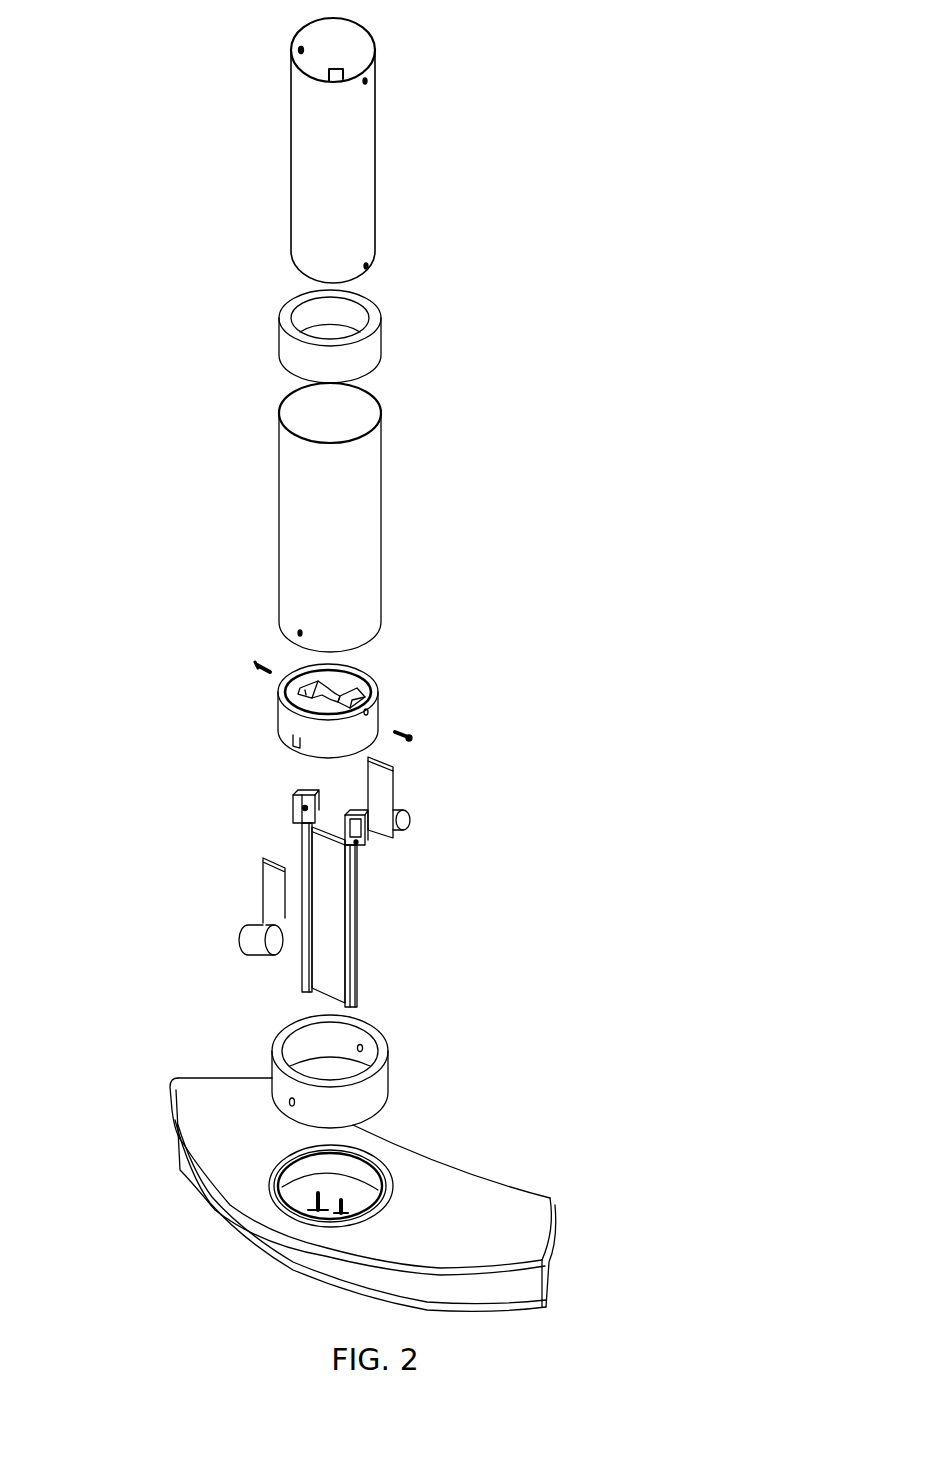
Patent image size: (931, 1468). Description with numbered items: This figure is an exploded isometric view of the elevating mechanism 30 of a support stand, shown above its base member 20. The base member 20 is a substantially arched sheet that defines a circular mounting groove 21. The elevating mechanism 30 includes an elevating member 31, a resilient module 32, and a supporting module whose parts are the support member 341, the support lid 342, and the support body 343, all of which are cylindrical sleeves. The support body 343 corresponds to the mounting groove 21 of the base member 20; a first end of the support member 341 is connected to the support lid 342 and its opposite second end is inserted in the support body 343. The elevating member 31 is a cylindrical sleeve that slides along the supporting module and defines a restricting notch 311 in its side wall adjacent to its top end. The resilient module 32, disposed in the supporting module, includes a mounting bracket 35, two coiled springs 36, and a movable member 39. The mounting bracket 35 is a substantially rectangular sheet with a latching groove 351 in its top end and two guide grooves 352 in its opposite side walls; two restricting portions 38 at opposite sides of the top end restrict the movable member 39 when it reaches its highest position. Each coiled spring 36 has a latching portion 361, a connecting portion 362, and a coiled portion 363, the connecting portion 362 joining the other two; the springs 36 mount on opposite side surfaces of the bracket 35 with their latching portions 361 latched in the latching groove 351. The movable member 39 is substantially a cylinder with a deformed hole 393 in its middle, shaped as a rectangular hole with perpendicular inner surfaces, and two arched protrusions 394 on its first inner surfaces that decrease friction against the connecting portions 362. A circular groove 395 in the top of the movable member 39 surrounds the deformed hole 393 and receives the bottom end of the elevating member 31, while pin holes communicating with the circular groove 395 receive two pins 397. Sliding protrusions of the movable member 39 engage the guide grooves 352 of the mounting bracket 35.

The base member 20 is at (500, 1198).
The mounting groove 21 is at (352, 1165).
The elevating mechanism 30 is at (218, 324).
The elevating member 31 is at (365, 147).
The restricting notch 311 is at (312, 63).
The resilient module 32 is at (163, 712).
The support member 341 is at (368, 515).
The support lid 342 is at (373, 353).
The support body 343 is at (373, 1092).
The mounting bracket 35 is at (308, 885).
The latching groove 351 is at (330, 832).
The guide grooves 352 is at (350, 952).
The coiled springs 36 is at (355, 852).
The latching portion 361 is at (390, 768).
The connecting portion 362 is at (387, 783).
The coiled portion 363 is at (440, 821).
The restricting portions 38 is at (362, 838).
The movable member 39 is at (285, 720).
The deformed hole 393 is at (360, 687).
The arched protrusions 394 is at (337, 690).
The circular groove 395 is at (290, 690).
The pins 397 is at (265, 661).